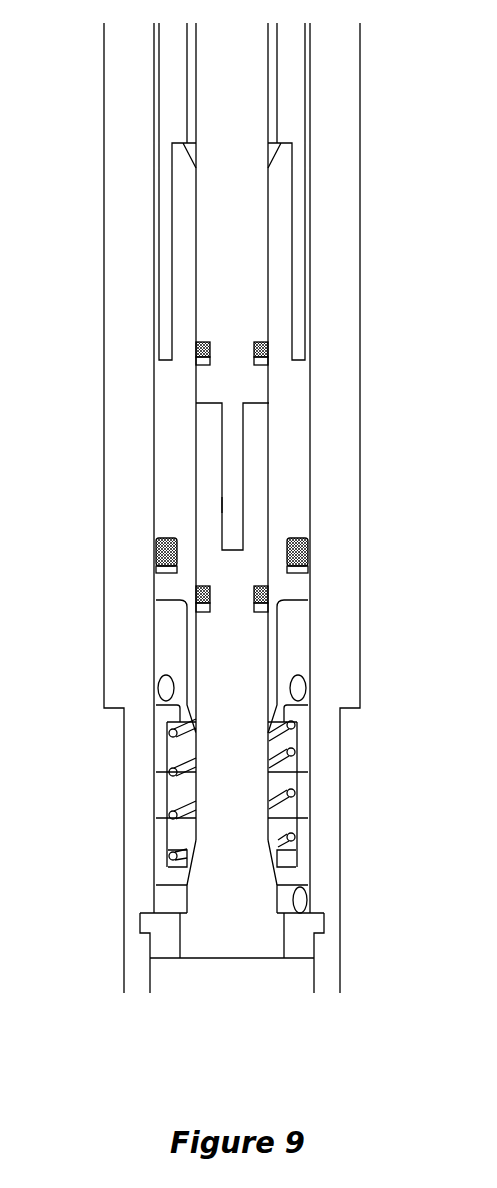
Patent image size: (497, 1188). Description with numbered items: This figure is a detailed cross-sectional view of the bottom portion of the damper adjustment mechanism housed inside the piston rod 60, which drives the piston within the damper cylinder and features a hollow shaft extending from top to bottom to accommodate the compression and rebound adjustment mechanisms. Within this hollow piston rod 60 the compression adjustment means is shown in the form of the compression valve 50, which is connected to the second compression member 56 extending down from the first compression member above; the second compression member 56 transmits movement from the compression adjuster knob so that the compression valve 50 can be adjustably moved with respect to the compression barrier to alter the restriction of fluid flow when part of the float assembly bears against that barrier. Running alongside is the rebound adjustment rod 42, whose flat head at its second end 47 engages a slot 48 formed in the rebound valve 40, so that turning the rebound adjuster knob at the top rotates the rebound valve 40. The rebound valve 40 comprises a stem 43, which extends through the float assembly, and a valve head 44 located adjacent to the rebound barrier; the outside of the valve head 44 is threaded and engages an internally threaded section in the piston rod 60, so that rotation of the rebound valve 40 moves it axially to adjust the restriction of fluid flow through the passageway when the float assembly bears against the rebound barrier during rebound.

The rebound adjustment rod 42 is at (225, 105).
The second compression member 56 is at (296, 227).
The compression valve 50 is at (296, 447).
The second end 47 is at (223, 455).
The slot 48 is at (224, 498).
The rebound valve 40 is at (226, 669).
The piston rod 60 is at (296, 661).
The stem 43 is at (226, 795).
The valve head 44 is at (226, 908).